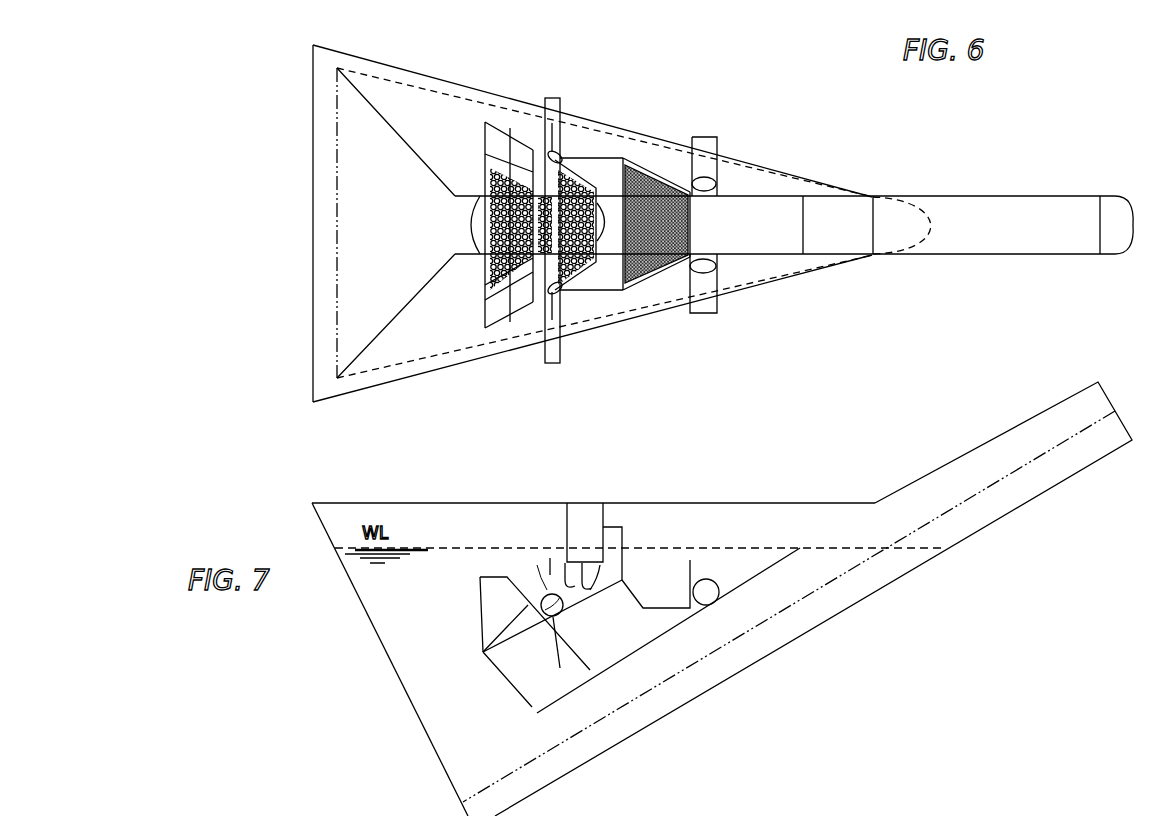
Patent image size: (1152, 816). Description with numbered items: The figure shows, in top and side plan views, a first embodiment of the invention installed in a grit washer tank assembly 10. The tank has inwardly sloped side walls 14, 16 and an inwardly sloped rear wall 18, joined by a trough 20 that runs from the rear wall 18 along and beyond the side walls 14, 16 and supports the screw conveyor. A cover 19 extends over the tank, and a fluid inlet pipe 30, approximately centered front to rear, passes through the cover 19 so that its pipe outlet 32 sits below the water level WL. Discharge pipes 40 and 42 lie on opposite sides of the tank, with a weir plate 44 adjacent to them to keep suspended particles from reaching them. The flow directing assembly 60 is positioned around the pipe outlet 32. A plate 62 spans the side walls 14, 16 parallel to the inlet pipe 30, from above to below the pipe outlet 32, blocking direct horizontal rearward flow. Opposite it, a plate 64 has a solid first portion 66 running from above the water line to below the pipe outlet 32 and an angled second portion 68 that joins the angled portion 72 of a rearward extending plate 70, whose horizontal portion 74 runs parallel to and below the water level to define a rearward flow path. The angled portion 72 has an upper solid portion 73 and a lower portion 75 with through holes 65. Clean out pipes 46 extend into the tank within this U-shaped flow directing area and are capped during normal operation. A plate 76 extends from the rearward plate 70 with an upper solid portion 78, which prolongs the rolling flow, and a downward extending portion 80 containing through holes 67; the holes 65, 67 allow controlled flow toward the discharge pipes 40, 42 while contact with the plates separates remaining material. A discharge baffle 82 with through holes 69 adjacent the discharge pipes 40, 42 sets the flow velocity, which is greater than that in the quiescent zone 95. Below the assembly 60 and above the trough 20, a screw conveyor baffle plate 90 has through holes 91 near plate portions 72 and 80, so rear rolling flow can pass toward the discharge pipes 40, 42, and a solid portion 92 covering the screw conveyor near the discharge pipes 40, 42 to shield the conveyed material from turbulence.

In FIG. 6, the grit washer tank assembly 10 is at (915, 156).
In FIG. 7, the grit washer tank assembly 10 is at (857, 463).
In FIG. 6, the side wall 14 is at (384, 383).
In FIG. 6, the side wall 16 is at (398, 68).
In FIG. 6, the rear wall 18 is at (348, 272).
In FIG. 7, the rear wall 18 is at (391, 663).
In FIG. 7, the cover 19 is at (444, 503).
In FIG. 6, the trough 20 is at (784, 249).
In FIG. 7, the trough 20 is at (858, 602).
In FIG. 6, the fluid inlet pipe 30 is at (606, 253).
In FIG. 7, the fluid inlet pipe 30 is at (612, 506).
In FIG. 7, the pipe outlet 32 is at (625, 573).
In FIG. 6, the discharge pipe 40 is at (717, 152).
In FIG. 7, the discharge pipe 40 is at (750, 606).
In FIG. 6, the discharge pipe 42 is at (715, 306).
In FIG. 6, the weir plate 44 is at (681, 278).
In FIG. 7, the weir plate 44 is at (698, 578).
In FIG. 6, the clean out pipe 46 is at (555, 98).
In FIG. 7, the clean out pipe 46 is at (567, 652).
In FIG. 7, the flow directing assembly 60 is at (616, 512).
In FIG. 6, the plate 62 is at (563, 152).
In FIG. 7, the plate 62 is at (556, 566).
In FIG. 6, the plate 64 is at (602, 303).
In FIG. 7, the plate 64 is at (605, 607).
In FIG. 7, the through holes 65 is at (580, 654).
In FIG. 6, the first portion 66 is at (623, 157).
In FIG. 7, the first portion 66 is at (623, 537).
In FIG. 7, the through holes 67 is at (514, 672).
In FIG. 6, the second portion 68 is at (583, 282).
In FIG. 7, the second portion 68 is at (611, 611).
In FIG. 7, the through holes 69 is at (640, 597).
In FIG. 6, the rearward extending plate 70 is at (540, 290).
In FIG. 7, the rearward extending plate 70 is at (501, 562).
In FIG. 6, the angled portion 72 is at (520, 140).
In FIG. 7, the angled portion 72 is at (540, 637).
In FIG. 7, the upper solid portion 73 is at (548, 594).
In FIG. 6, the horizontal portion 74 is at (496, 136).
In FIG. 7, the horizontal portion 74 is at (482, 586).
In FIG. 7, the lower portion 75 is at (570, 640).
In FIG. 7, the plate 76 is at (475, 625).
In FIG. 6, the upper solid portion 78 is at (486, 317).
In FIG. 7, the upper solid portion 78 is at (499, 630).
In FIG. 6, the downward extending portion 80 is at (490, 287).
In FIG. 7, the downward extending portion 80 is at (528, 704).
In FIG. 6, the discharge baffle 82 is at (657, 166).
In FIG. 7, the discharge baffle 82 is at (678, 621).
In FIG. 7, the screw conveyor baffle plate 90 is at (633, 674).
In FIG. 7, the through holes 91 is at (756, 580).
In FIG. 7, the solid portion 92 is at (597, 678).
In FIG. 7, the quiescent zone 95 is at (449, 733).